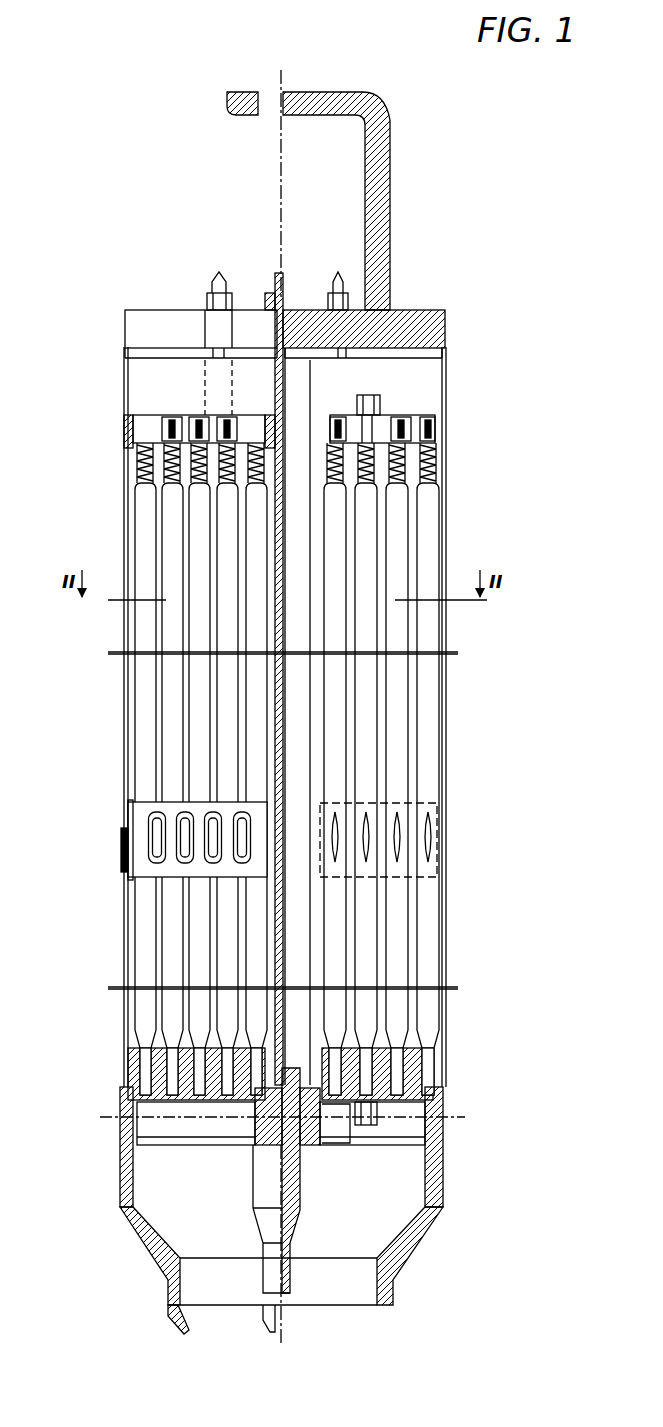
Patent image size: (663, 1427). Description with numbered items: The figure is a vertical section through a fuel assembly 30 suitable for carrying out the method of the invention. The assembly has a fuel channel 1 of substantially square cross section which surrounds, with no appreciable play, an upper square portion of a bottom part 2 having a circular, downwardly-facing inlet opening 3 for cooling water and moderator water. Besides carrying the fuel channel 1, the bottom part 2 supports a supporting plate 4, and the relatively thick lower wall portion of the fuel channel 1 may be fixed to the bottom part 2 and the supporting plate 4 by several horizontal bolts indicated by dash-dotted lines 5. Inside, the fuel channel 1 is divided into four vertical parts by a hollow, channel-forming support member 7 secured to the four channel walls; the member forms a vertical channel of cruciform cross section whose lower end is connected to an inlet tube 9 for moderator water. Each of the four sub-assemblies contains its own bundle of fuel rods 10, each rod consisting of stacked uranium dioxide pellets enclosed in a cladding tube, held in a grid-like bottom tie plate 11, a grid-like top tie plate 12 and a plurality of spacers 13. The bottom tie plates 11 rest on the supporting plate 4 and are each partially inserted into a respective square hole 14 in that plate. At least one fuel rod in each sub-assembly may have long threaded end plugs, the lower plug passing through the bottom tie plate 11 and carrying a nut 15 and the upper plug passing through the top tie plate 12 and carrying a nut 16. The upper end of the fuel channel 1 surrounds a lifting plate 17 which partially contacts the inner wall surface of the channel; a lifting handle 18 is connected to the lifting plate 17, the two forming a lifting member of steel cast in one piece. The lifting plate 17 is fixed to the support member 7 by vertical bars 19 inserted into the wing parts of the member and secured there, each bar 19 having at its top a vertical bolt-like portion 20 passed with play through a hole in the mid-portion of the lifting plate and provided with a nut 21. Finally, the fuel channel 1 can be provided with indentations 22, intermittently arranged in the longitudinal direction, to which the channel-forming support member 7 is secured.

The fuel channel 1 is at (446, 706).
The bottom part 2 is at (120, 1210).
The inlet opening 3 is at (320, 1290).
The supporting plate 4 is at (138, 1137).
The horizontal bolts 5 is at (88, 1112).
The channel-forming support member 7 is at (272, 720).
The inlet tube 9 is at (260, 1273).
The fuel rods 10 is at (423, 570).
The bottom tie plate 11 is at (125, 1070).
The top tie plate 12 is at (413, 430).
The spacers 13 is at (430, 848).
The square hole 14 is at (335, 1110).
The nut 15 is at (372, 1122).
The nut 16 is at (372, 405).
The lifting plate 17 is at (362, 352).
The lifting handle 18 is at (356, 92).
The vertical bars 19 is at (205, 396).
The bolt-like portion 20 is at (332, 292).
The nut 21 is at (213, 312).
The indentations 22 is at (122, 925).
The fuel assembly 30 is at (458, 386).